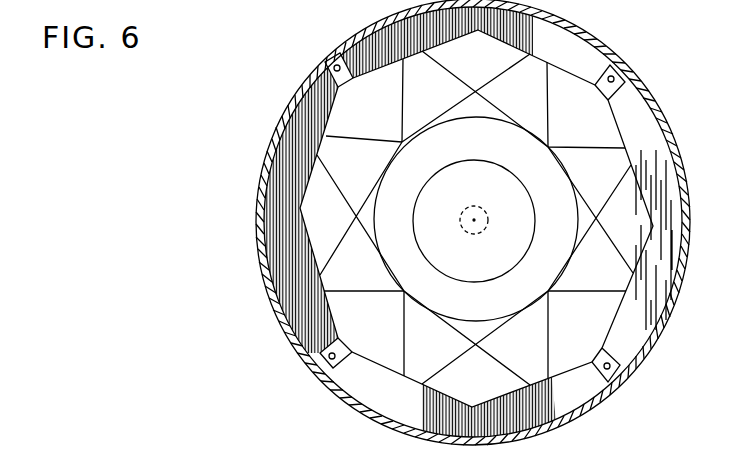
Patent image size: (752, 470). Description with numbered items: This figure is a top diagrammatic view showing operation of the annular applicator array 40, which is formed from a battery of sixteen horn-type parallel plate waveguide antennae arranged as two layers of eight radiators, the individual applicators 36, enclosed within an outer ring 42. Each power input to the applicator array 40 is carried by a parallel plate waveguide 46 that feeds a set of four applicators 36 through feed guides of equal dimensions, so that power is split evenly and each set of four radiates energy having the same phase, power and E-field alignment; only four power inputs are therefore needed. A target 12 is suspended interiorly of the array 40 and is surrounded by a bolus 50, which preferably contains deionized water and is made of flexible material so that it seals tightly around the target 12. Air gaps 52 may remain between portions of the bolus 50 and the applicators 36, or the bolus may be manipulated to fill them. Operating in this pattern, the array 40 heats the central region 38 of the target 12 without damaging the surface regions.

The target 12 is at (483, 266).
The applicators 36 is at (436, 100).
The central region 38 is at (472, 205).
The applicator array 40 is at (250, 146).
The rim 42 is at (298, 90).
The parallel plate waveguide 46 is at (327, 60).
The bolus 50 is at (497, 308).
The air gaps 52 is at (480, 99).